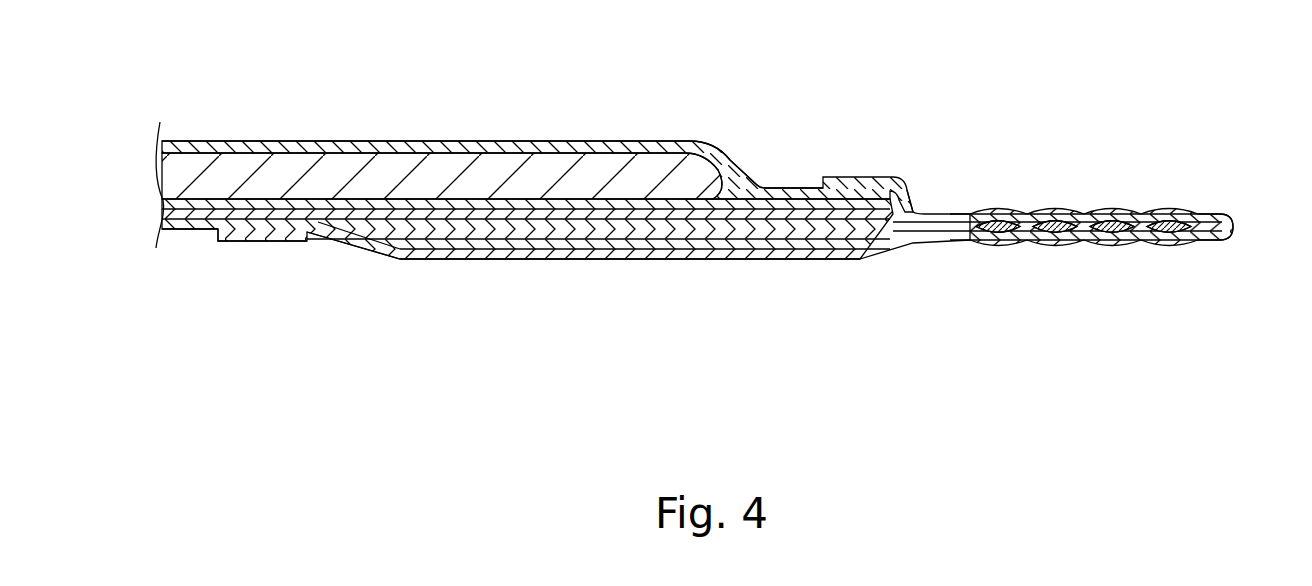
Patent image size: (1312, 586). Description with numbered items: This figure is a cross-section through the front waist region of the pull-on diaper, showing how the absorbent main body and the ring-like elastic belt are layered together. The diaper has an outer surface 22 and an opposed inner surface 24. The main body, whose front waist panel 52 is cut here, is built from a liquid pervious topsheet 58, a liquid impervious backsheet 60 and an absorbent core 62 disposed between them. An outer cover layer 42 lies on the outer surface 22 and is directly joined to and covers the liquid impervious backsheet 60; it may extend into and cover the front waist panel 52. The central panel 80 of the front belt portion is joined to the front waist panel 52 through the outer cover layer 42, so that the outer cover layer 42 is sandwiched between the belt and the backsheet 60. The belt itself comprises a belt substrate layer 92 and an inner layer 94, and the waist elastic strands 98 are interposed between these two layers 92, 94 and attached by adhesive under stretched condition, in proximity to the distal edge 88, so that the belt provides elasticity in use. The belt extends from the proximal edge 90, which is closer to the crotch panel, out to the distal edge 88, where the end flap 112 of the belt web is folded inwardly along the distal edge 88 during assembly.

The outer surface 22 is at (748, 294).
The inner surface 24 is at (706, 84).
The outer cover layer 42 is at (178, 224).
The front waist panel 52 is at (747, 163).
The liquid pervious topsheet 58 is at (530, 140).
The liquid impervious backsheet 60 is at (163, 205).
The absorbent core 62 is at (476, 172).
The central panel 80 is at (628, 271).
The distal edge 88 is at (1237, 222).
The proximal edge 90 is at (226, 246).
The belt substrate layer 92 is at (388, 257).
The inner layer 94 is at (307, 245).
The waist elastic strands 98 is at (992, 250).
The end flap 112 is at (1065, 208).